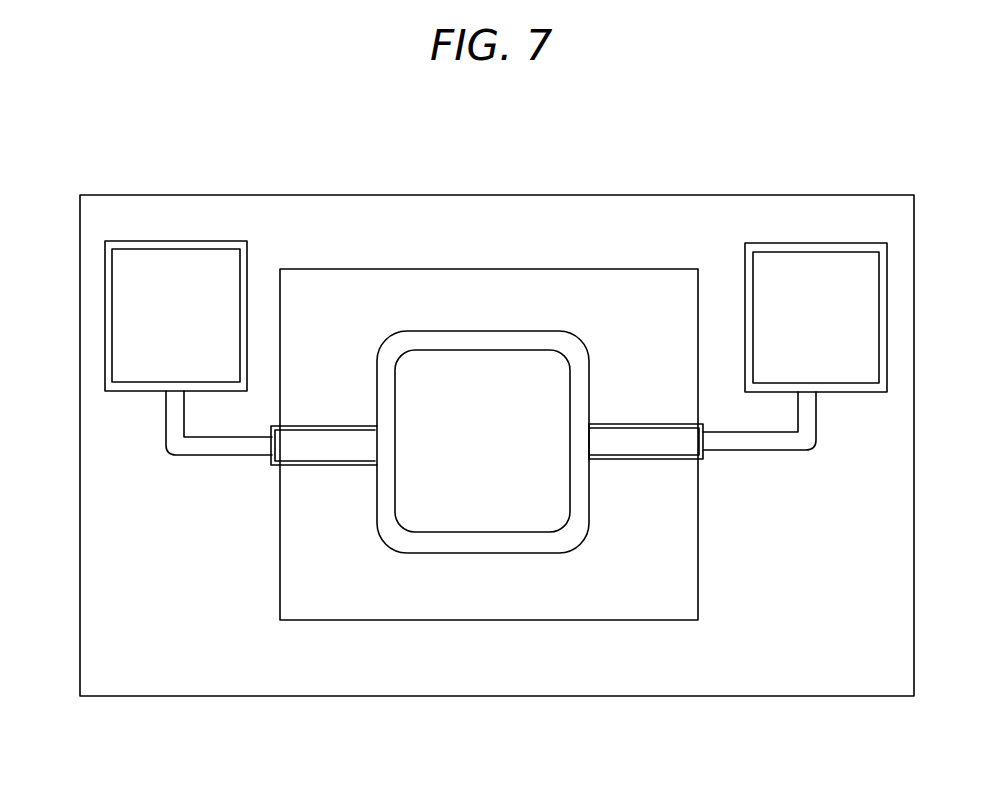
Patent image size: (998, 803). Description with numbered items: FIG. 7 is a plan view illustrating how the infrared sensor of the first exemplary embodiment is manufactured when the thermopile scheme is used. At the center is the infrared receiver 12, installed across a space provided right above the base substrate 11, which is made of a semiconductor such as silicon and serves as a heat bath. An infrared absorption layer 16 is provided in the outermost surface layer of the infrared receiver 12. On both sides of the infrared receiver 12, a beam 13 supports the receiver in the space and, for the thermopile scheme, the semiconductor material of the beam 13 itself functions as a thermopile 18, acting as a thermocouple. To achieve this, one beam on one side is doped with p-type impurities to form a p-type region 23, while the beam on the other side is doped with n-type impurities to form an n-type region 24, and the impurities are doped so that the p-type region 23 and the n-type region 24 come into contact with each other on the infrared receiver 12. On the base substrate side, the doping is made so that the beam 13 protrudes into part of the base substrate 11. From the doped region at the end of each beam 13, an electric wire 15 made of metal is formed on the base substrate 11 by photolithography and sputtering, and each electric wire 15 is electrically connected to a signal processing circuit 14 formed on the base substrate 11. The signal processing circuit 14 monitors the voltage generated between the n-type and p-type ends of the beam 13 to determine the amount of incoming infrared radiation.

The base substrate 11 is at (729, 227).
The infrared receiver 12 is at (495, 342).
The beam 13 is at (499, 598).
The signal processing circuit 14 is at (152, 318).
The electric wire 15 is at (176, 446).
The infrared absorption layer 16 is at (433, 380).
The thermopile 18 is at (499, 598).
The p-type region 23 is at (315, 447).
The n-type region 24 is at (620, 440).